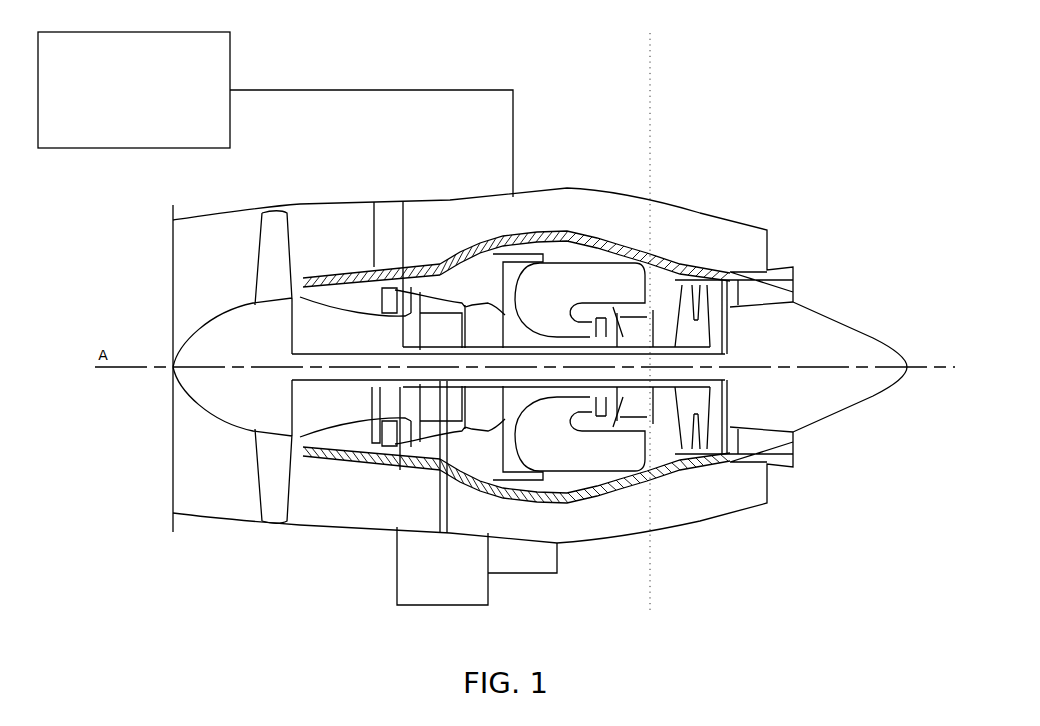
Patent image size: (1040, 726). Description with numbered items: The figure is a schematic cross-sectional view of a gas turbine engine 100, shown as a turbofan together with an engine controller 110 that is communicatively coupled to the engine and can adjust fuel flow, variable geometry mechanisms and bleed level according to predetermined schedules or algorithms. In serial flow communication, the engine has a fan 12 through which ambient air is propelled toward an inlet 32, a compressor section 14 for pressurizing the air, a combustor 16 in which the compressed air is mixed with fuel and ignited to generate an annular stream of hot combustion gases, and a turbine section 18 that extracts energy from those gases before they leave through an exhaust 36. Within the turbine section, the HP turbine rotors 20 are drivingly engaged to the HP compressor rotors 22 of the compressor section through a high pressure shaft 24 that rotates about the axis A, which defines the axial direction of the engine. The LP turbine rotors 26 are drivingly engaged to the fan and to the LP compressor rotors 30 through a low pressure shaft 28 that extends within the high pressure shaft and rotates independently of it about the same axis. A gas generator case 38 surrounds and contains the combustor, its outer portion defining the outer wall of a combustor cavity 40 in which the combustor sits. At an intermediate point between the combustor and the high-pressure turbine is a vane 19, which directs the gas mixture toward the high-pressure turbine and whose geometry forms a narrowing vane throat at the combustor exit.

The gas turbine engine 100 is at (696, 89).
The engine controller 110 is at (153, 131).
The fan 12 is at (270, 467).
The compressor section 14 is at (438, 277).
The combustor 16 is at (560, 232).
The turbine section 18 is at (655, 440).
The vane 19 is at (608, 310).
The HP turbine rotor 20 is at (670, 287).
The HP compressor rotor 22 is at (487, 312).
The high pressure shaft 24 is at (618, 240).
The LP turbine rotor 26 is at (705, 264).
The low pressure shaft 28 is at (333, 383).
The LP compressor rotor 30 is at (410, 308).
The inlet 32 is at (232, 283).
The exhaust 36 is at (793, 295).
The gas generator case 38 is at (577, 263).
The combustor cavity 40 is at (581, 347).